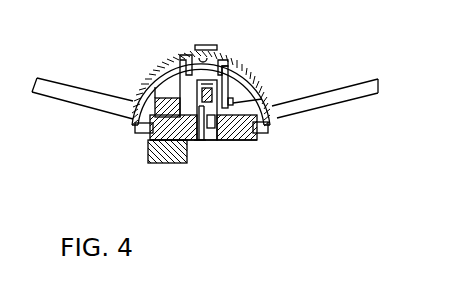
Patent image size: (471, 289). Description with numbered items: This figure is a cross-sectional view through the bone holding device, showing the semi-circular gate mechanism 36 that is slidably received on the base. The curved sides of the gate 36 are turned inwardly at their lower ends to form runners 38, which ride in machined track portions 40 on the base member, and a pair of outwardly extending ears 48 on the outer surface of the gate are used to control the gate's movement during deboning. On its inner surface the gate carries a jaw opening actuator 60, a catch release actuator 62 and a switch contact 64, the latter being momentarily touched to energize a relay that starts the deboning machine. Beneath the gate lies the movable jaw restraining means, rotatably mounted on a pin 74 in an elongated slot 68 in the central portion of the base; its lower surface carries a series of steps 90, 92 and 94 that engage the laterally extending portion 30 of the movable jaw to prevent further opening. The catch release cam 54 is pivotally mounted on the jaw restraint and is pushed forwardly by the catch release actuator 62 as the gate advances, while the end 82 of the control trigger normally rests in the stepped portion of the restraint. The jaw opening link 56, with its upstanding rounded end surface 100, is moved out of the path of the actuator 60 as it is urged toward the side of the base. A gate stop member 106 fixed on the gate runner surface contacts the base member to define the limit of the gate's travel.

The laterally extending portion 30 is at (150, 158).
The gate mechanism 36 is at (145, 123).
The runners 38 is at (263, 130).
The track portions 40 is at (263, 138).
The ears 48 is at (72, 93).
The catch release cam 54 is at (226, 92).
The jaw opening link 56 is at (157, 108).
The jaw opening actuator 60 is at (187, 63).
The catch release actuator 62 is at (227, 65).
The switch contact 64 is at (205, 47).
The elongated slot 68 is at (196, 142).
The pin 74 is at (262, 125).
The end of trigger assembly 82 is at (213, 93).
The step 90 is at (200, 142).
The step 92 is at (202, 142).
The step 94 is at (217, 140).
The rounded end surface 100 is at (173, 88).
The gate stop member 106 is at (148, 140).